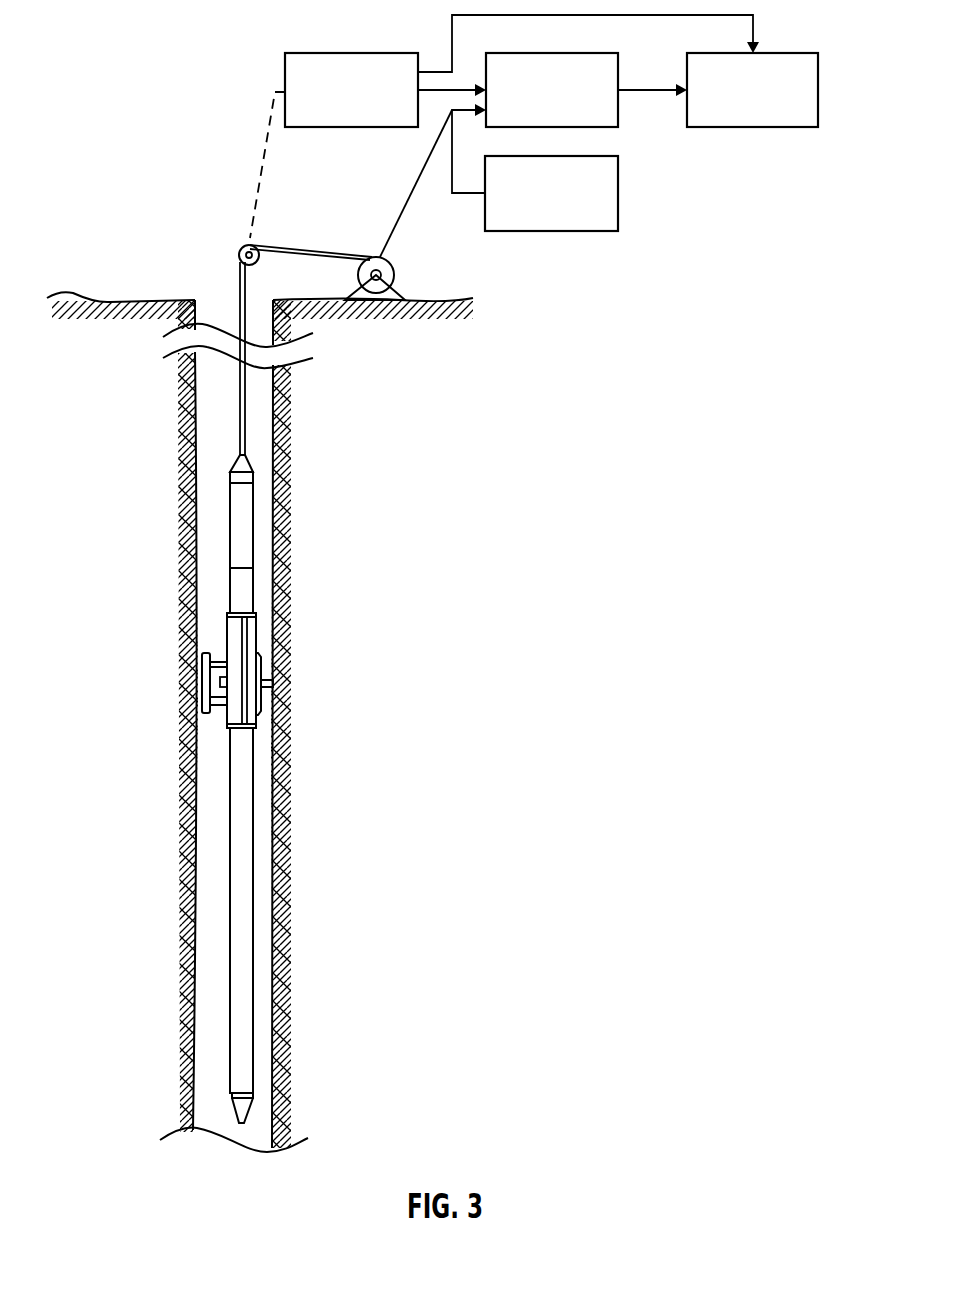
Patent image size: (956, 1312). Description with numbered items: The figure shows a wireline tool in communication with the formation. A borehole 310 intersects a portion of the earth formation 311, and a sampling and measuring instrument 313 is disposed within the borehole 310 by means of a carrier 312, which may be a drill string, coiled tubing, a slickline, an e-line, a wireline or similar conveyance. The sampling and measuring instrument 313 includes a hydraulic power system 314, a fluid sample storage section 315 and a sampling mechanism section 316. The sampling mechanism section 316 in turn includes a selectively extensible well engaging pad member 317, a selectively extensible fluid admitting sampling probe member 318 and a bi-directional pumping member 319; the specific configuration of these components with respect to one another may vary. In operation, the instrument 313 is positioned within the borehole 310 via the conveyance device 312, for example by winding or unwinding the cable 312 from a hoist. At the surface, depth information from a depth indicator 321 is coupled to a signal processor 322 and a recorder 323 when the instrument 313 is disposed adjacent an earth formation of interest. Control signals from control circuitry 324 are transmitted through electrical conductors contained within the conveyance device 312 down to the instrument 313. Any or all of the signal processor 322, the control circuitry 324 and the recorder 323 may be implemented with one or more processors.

The borehole 310 is at (215, 432).
The earth formation 311 is at (160, 767).
The carrier 312 is at (245, 413).
The sampling and measuring instrument 313 is at (235, 786).
The hydraulic power system 314 is at (253, 548).
The fluid sample storage section 315 is at (228, 927).
The sampling mechanism section 316 is at (258, 627).
The well engaging pad member 317 is at (200, 682).
The fluid admitting sampling probe member 318 is at (263, 673).
The bi-directional pumping member 319 is at (228, 592).
The depth indicator 321 is at (352, 53).
The signal processor 322 is at (552, 53).
The recorder 323 is at (782, 53).
The control circuitry 324 is at (553, 231).